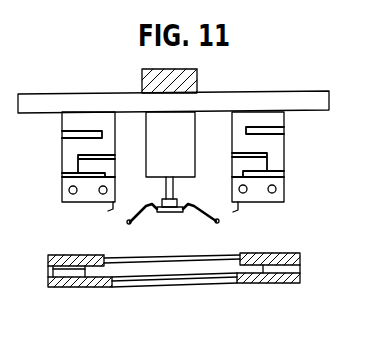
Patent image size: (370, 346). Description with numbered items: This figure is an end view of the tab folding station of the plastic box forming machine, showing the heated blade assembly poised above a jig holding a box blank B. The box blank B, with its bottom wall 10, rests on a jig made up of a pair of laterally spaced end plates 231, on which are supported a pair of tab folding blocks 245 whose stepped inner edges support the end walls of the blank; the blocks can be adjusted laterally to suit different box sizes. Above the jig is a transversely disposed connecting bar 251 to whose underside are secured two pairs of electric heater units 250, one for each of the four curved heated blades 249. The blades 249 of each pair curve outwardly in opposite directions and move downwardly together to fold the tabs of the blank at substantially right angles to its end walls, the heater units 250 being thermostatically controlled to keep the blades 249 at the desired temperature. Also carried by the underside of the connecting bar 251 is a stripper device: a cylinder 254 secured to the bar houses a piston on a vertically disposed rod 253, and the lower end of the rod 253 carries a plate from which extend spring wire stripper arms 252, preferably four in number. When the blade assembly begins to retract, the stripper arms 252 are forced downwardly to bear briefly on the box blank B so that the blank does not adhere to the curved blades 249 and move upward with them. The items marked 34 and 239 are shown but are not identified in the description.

The connecting bar 251 is at (197, 75).
The cylinder 254 is at (182, 141).
The rod 253 is at (173, 194).
The spring wire stripper arms 252 is at (192, 220).
The heater units 250 is at (70, 162).
The curved heated blades 249 is at (110, 209).
The tab folding blocks 245 is at (283, 253).
The bottom wall 10 is at (219, 256).
The end plates 231 is at (135, 270).
The layer 34 is at (157, 270).
The box blank B is at (197, 262).
The lower frame 239 is at (250, 287).